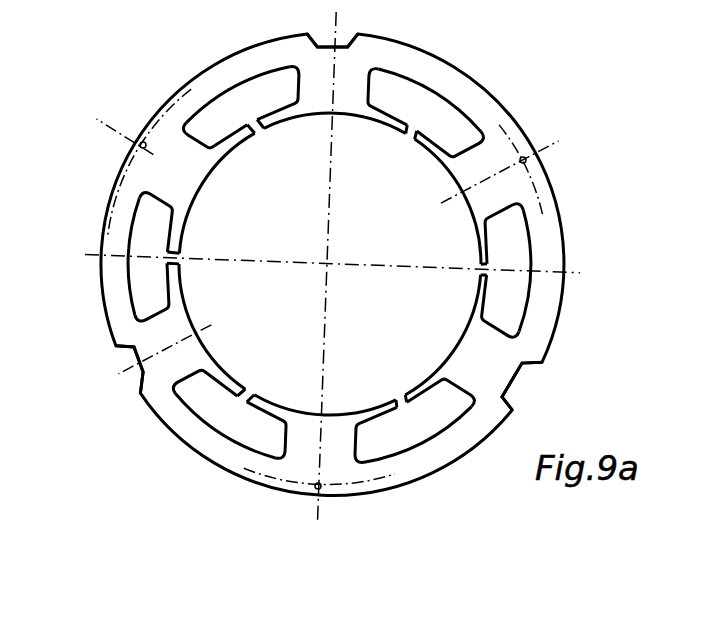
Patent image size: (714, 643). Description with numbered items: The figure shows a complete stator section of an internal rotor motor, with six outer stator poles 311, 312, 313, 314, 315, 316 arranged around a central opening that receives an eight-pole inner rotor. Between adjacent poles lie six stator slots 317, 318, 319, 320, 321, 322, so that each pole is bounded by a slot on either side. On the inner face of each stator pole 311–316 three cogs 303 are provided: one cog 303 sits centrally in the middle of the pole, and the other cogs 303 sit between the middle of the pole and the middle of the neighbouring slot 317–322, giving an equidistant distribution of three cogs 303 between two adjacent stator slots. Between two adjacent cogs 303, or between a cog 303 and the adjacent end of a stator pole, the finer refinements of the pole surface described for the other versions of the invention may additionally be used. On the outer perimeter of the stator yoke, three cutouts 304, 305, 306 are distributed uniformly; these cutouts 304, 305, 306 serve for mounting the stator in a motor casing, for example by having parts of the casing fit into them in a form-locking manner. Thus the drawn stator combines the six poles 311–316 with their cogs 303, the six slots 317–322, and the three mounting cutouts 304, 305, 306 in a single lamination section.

The cog 303 is at (330, 264).
The cutout 304 is at (344, 40).
The cutout 305 is at (512, 378).
The cutout 306 is at (121, 357).
The stator pole 311 is at (192, 188).
The stator pole 312 is at (333, 94).
The stator pole 313 is at (469, 197).
The stator pole 314 is at (464, 340).
The stator pole 315 is at (321, 433).
The stator pole 316 is at (187, 329).
The slot 317 is at (255, 126).
The slot 318 is at (411, 132).
The slot 319 is at (484, 270).
The slot 320 is at (401, 401).
The slot 321 is at (245, 395).
The slot 322 is at (173, 258).